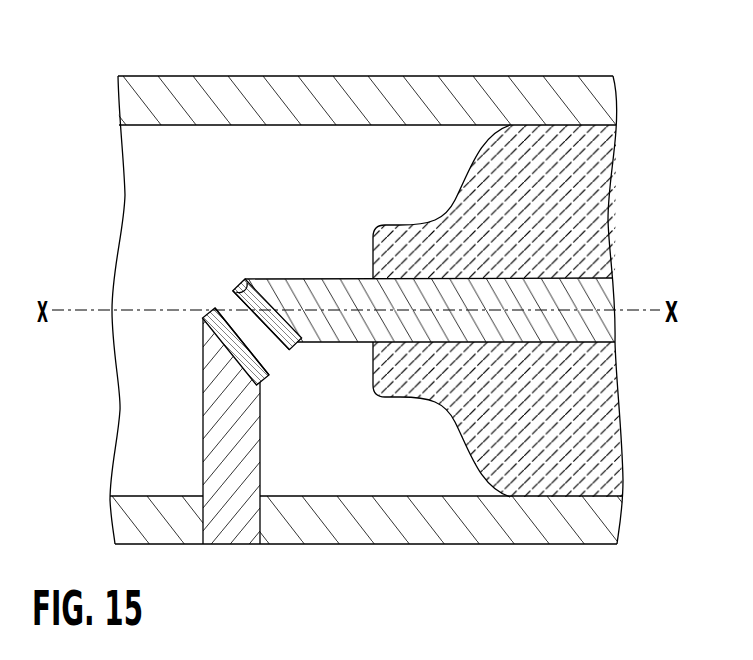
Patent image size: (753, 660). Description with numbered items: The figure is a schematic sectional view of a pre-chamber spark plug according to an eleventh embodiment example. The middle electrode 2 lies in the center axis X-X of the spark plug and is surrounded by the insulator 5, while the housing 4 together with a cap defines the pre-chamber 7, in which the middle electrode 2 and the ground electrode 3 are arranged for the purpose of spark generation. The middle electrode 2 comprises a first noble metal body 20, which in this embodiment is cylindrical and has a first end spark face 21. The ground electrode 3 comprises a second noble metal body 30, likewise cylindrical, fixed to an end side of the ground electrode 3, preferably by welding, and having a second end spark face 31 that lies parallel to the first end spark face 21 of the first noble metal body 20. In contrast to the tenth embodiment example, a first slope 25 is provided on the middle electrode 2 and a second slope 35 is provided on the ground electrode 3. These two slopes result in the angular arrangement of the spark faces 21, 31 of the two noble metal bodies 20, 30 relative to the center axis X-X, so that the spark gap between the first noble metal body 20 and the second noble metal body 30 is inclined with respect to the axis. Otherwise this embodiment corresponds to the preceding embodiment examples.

The middle electrode 2 is at (351, 289).
The ground electrode 3 is at (203, 452).
The housing 4 is at (540, 520).
The insulator 5 is at (573, 203).
The pre-chamber 7 is at (168, 240).
The first noble metal body 20 is at (292, 353).
The first end spark face 21 is at (278, 353).
The first slope 25 is at (235, 291).
The second noble metal body 30 is at (230, 348).
The second end spark face 31 is at (238, 329).
The second slope 35 is at (274, 350).